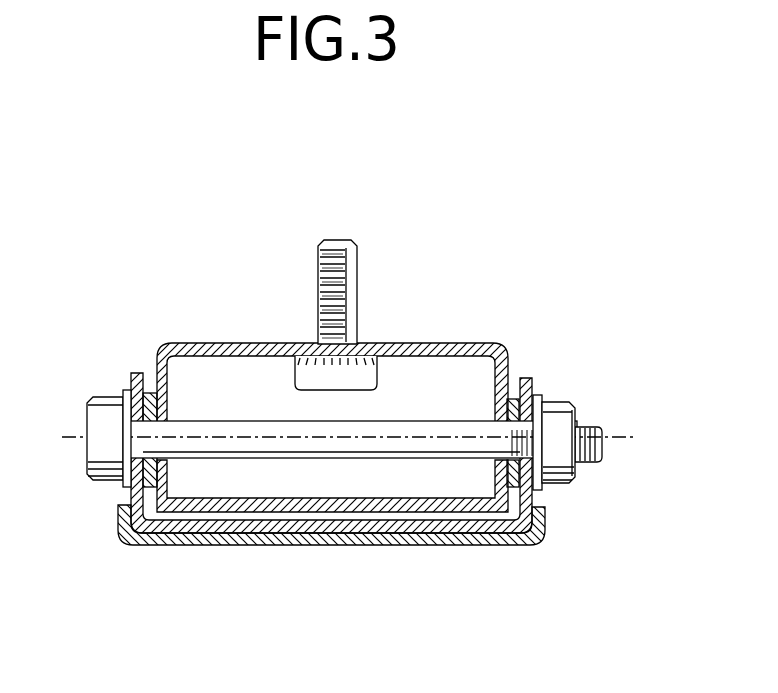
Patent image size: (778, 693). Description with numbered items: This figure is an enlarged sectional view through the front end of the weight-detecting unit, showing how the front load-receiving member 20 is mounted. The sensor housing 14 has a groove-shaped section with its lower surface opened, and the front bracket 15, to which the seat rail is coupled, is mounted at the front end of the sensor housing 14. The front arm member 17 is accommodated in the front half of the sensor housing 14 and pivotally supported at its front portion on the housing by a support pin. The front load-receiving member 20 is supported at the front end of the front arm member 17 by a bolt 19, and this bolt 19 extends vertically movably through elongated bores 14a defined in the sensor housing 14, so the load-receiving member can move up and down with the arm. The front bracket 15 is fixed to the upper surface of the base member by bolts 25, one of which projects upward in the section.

The sensor housing 14 is at (287, 545).
The elongated bores 14a is at (117, 407).
The front bracket 15 is at (397, 548).
The front arm member 17 is at (357, 497).
The bolt 19 is at (262, 431).
The front load-receiving member 20 is at (445, 352).
The bolt 25 is at (357, 280).